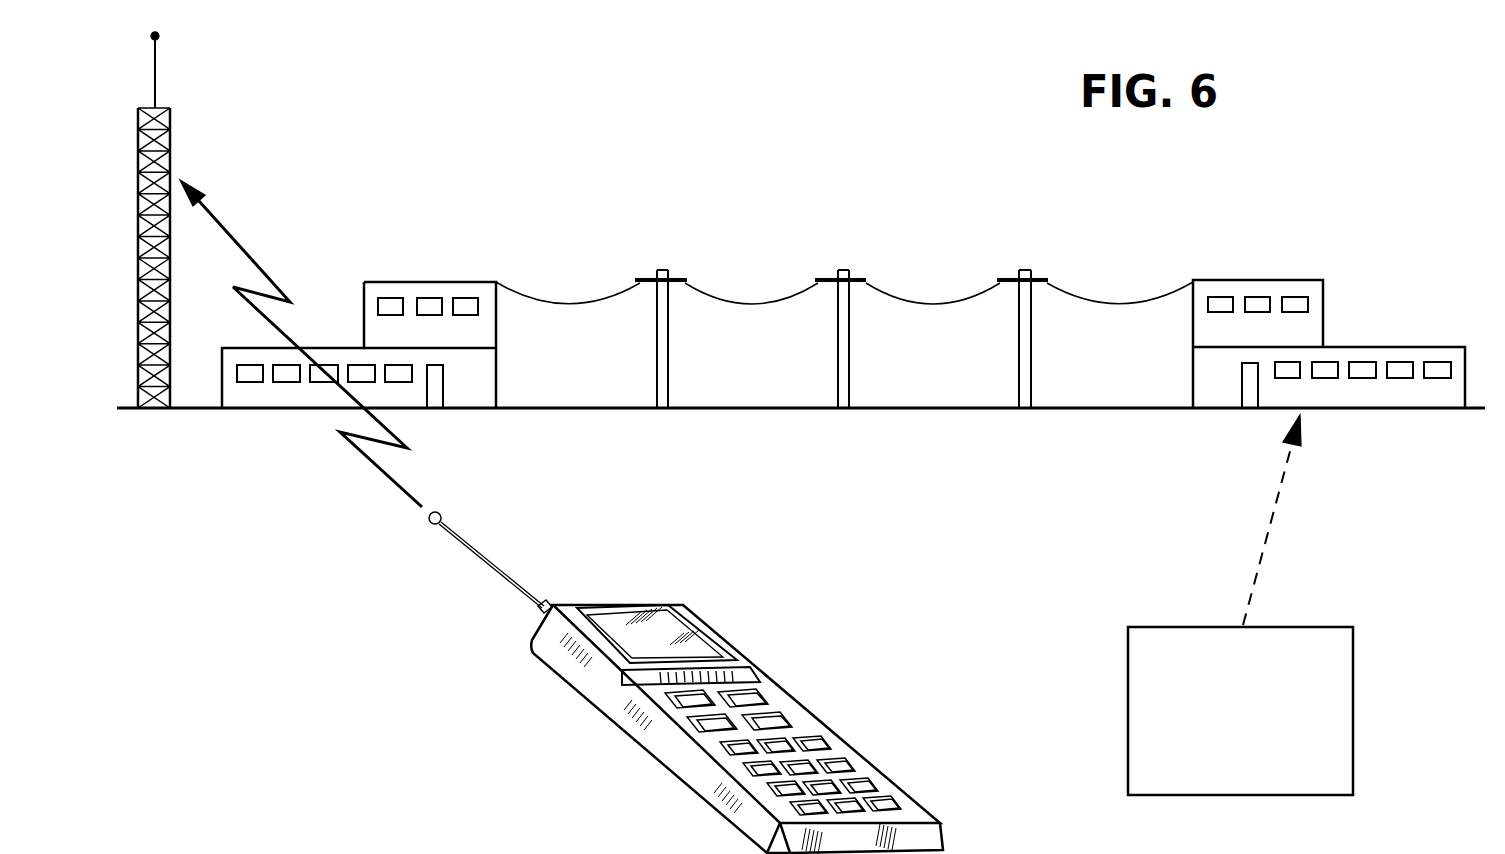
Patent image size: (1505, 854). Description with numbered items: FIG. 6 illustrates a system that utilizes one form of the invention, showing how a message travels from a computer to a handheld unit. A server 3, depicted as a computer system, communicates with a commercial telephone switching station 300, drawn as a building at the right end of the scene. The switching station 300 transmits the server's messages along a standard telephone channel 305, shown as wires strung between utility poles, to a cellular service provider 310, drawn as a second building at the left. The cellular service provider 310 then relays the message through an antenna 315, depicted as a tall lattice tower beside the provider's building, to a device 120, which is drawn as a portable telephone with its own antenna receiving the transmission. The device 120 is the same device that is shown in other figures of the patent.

The antenna 315 is at (157, 75).
The cellular service provider 310 is at (442, 270).
The standard telephone channel 305 is at (850, 245).
The commercial telephone switching station 300 is at (1289, 268).
The device 120 is at (767, 653).
The server 3 is at (1127, 673).